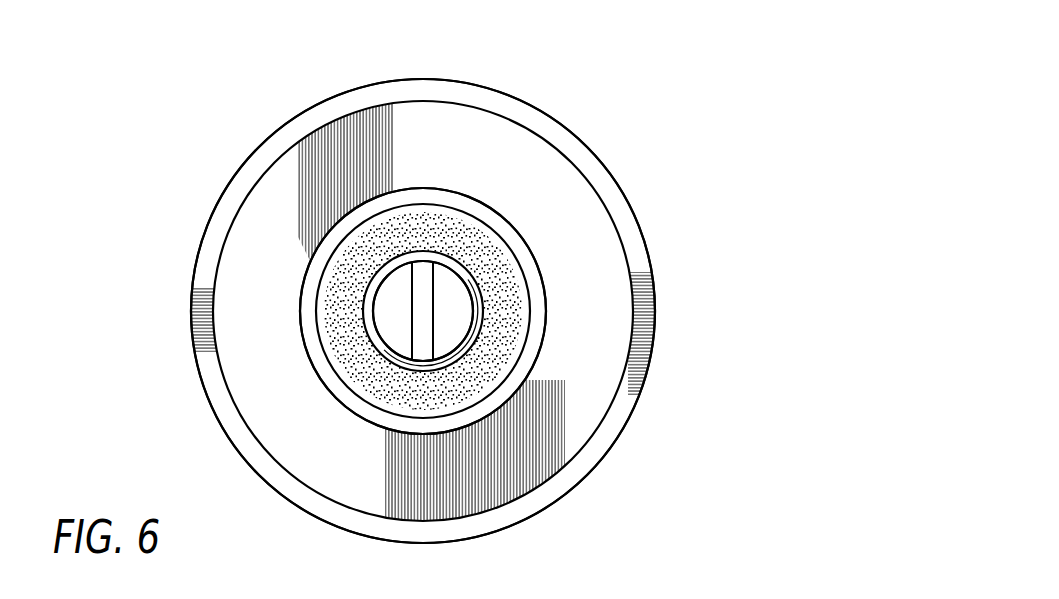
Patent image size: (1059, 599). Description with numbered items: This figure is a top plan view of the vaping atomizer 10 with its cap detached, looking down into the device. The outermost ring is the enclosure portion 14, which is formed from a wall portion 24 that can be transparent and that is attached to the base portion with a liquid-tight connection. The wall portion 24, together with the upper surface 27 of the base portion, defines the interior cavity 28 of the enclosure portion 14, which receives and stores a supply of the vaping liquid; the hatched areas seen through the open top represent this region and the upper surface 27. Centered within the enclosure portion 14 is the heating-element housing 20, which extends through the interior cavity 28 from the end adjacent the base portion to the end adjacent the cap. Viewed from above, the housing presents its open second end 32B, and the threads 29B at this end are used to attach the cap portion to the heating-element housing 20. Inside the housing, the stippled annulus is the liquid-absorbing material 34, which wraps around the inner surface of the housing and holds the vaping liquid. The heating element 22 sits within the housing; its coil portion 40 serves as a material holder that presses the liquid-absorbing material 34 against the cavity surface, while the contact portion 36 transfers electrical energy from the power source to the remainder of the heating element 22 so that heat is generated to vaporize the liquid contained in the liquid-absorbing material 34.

The vaping atomizer 10 is at (530, 546).
The enclosure portion 14 is at (200, 417).
The heating-element housing 20 is at (567, 311).
The heating element 22 is at (433, 295).
The wall portion 24 is at (330, 527).
The upper surface 27 is at (295, 207).
The interior cavity 28 is at (570, 427).
The threads 29B is at (498, 392).
The open second end 32B is at (515, 357).
The liquid-absorbing material 34 is at (477, 263).
The contact portion 36 is at (427, 275).
The coil portion 40 is at (390, 268).